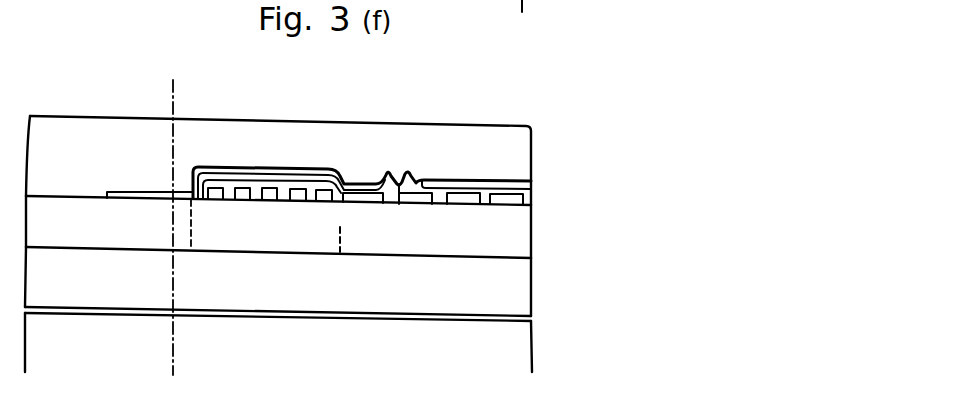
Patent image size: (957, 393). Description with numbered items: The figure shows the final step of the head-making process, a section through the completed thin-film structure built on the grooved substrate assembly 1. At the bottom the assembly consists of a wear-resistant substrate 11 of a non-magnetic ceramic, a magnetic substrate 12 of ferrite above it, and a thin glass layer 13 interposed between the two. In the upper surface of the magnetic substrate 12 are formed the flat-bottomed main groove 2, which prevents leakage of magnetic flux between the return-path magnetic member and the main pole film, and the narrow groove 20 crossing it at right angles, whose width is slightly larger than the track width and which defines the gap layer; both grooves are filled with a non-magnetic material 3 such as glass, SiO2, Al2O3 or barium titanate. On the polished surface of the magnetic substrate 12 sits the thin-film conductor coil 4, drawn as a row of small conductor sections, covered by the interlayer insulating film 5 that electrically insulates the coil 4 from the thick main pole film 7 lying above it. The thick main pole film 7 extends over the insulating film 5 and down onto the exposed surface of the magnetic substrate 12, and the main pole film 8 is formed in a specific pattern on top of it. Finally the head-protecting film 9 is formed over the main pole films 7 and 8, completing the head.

The grooved substrate assembly 1 is at (323, 309).
The wear-resistant substrate 11 is at (304, 342).
The magnetic substrate 12 is at (518, 288).
The glass layer 13 is at (518, 317).
The narrow groove 20 is at (500, 258).
The non-magnetic material 3 is at (510, 217).
The main groove 2 is at (341, 224).
The thin-film conductor coil 4 is at (220, 192).
The interlayer insulating film 5 is at (260, 184).
The thick main pole film 7 is at (304, 174).
The main pole film 8 is at (334, 173).
The head-protecting film 9 is at (447, 138).